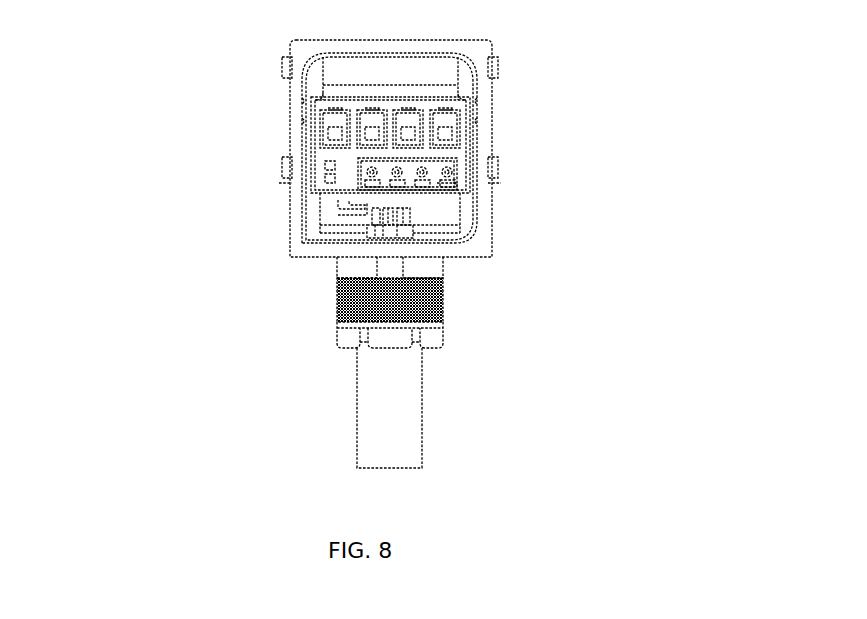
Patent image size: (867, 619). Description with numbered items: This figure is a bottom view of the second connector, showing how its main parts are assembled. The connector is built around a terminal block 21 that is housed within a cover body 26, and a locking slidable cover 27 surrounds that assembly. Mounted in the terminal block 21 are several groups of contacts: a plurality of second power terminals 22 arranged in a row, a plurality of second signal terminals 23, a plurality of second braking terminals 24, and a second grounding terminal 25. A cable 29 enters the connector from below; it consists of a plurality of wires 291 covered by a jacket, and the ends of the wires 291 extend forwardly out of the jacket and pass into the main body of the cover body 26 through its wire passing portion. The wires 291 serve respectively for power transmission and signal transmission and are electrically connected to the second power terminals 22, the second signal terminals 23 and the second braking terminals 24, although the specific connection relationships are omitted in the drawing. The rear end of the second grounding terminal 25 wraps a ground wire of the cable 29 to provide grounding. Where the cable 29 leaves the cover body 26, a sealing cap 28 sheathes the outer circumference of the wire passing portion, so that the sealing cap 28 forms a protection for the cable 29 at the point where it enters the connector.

The terminal block 21 is at (466, 152).
The second power terminal 22 is at (451, 128).
The second signal terminals 23 is at (459, 189).
The second braking terminals 24 is at (370, 171).
The second grounding terminal 25 is at (339, 213).
The cover body 26 is at (468, 49).
The locking slidable cover 27 is at (288, 98).
The sealing cap 28 is at (447, 325).
The cable 29 is at (422, 421).
The wires 291 is at (365, 242).